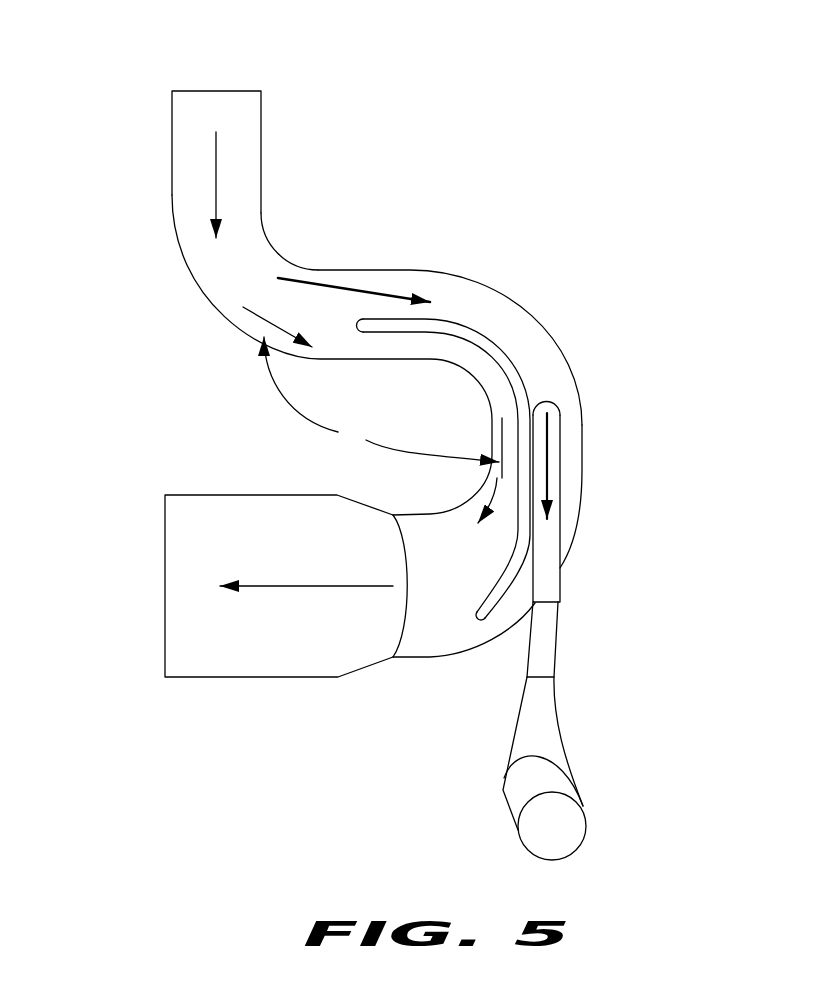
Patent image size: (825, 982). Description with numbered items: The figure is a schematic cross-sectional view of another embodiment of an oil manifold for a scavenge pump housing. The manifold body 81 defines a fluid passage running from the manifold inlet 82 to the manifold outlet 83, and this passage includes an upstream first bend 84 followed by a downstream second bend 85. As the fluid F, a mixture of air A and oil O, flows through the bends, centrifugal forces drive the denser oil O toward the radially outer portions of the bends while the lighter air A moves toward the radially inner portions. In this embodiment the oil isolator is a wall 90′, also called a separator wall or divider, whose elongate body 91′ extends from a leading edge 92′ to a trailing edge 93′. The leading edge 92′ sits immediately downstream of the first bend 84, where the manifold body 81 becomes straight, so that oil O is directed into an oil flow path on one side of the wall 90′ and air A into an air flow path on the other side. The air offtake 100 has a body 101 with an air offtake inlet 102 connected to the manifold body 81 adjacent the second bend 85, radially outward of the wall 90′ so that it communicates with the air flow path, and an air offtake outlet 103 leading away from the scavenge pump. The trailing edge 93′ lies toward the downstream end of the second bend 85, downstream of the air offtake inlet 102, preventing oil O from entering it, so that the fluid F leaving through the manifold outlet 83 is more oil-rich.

The manifold body 81 is at (578, 388).
The manifold inlet 82 is at (227, 81).
The manifold outlet 83 is at (211, 646).
The first bend 84 is at (222, 339).
The second bend 85 is at (521, 300).
The wall 90′ is at (507, 356).
The elongate body 91′ is at (513, 383).
The leading edge 92′ is at (368, 321).
The trailing edge 93′ is at (473, 624).
The air offtake 100 is at (584, 667).
The air offtake body 101 is at (549, 567).
The air offtake inlet 102 is at (555, 413).
The air offtake outlet 103 is at (601, 835).
The fluid F is at (240, 155).
The air A is at (340, 288).
The oil O is at (381, 399).